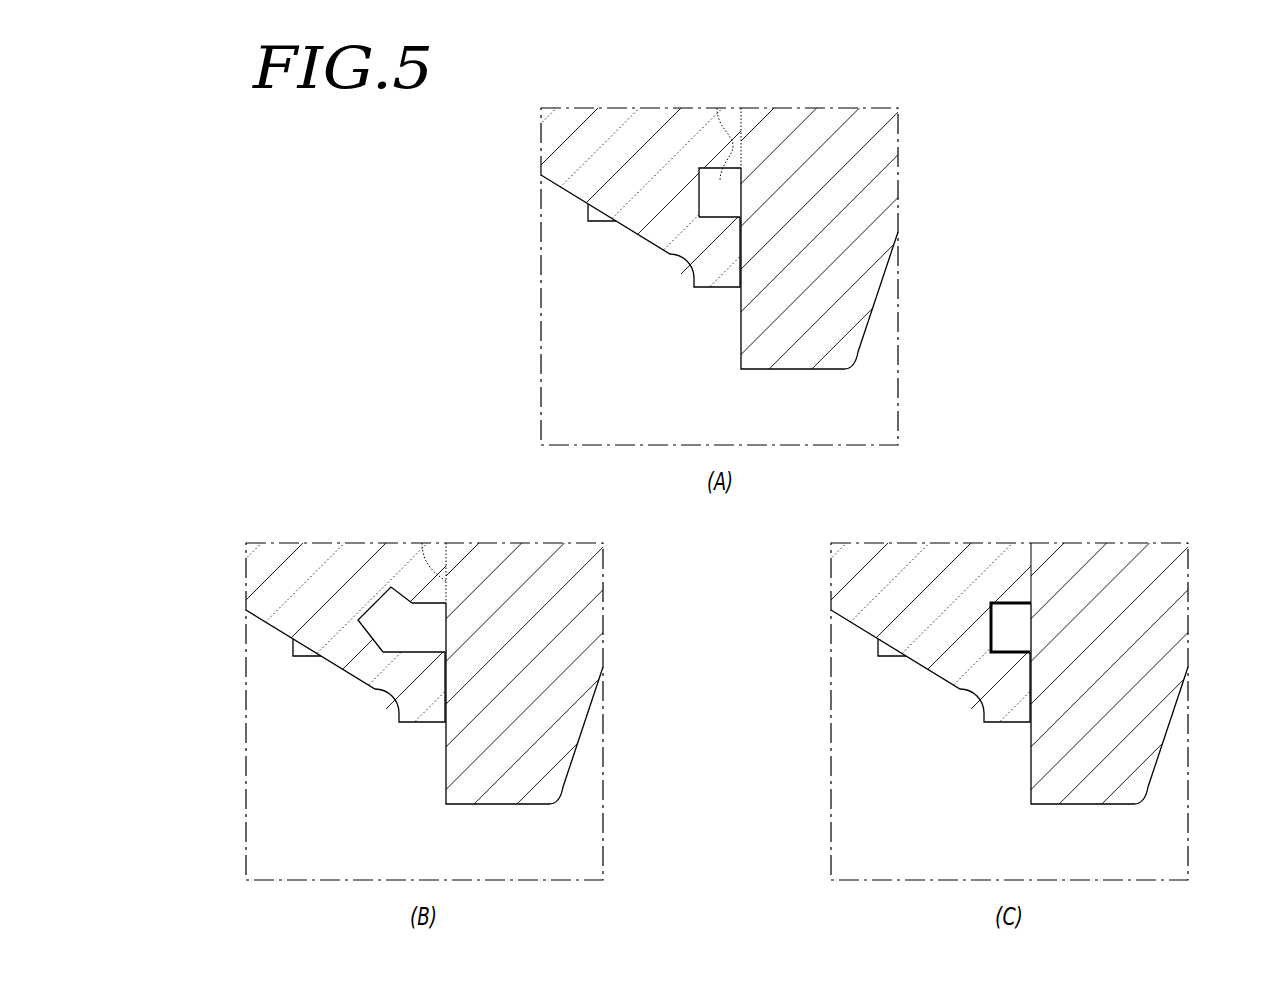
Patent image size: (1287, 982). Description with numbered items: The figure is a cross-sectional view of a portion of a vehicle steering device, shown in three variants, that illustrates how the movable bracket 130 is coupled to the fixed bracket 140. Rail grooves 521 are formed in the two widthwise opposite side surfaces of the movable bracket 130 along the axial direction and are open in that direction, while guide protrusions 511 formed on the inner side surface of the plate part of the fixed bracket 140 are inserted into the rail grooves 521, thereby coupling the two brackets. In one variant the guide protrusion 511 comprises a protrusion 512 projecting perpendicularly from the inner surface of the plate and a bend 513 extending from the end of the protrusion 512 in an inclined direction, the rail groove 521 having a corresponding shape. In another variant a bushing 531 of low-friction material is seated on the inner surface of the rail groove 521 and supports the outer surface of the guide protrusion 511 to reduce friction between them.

The movable bracket 130 is at (615, 442).
The fixed bracket 140 is at (733, 470).
The guide protrusion 511 is at (725, 346).
The protrusion 512 is at (446, 545).
The bend 513 is at (396, 561).
The rail groove 521 is at (614, 495).
The bushing 531 is at (1015, 565).